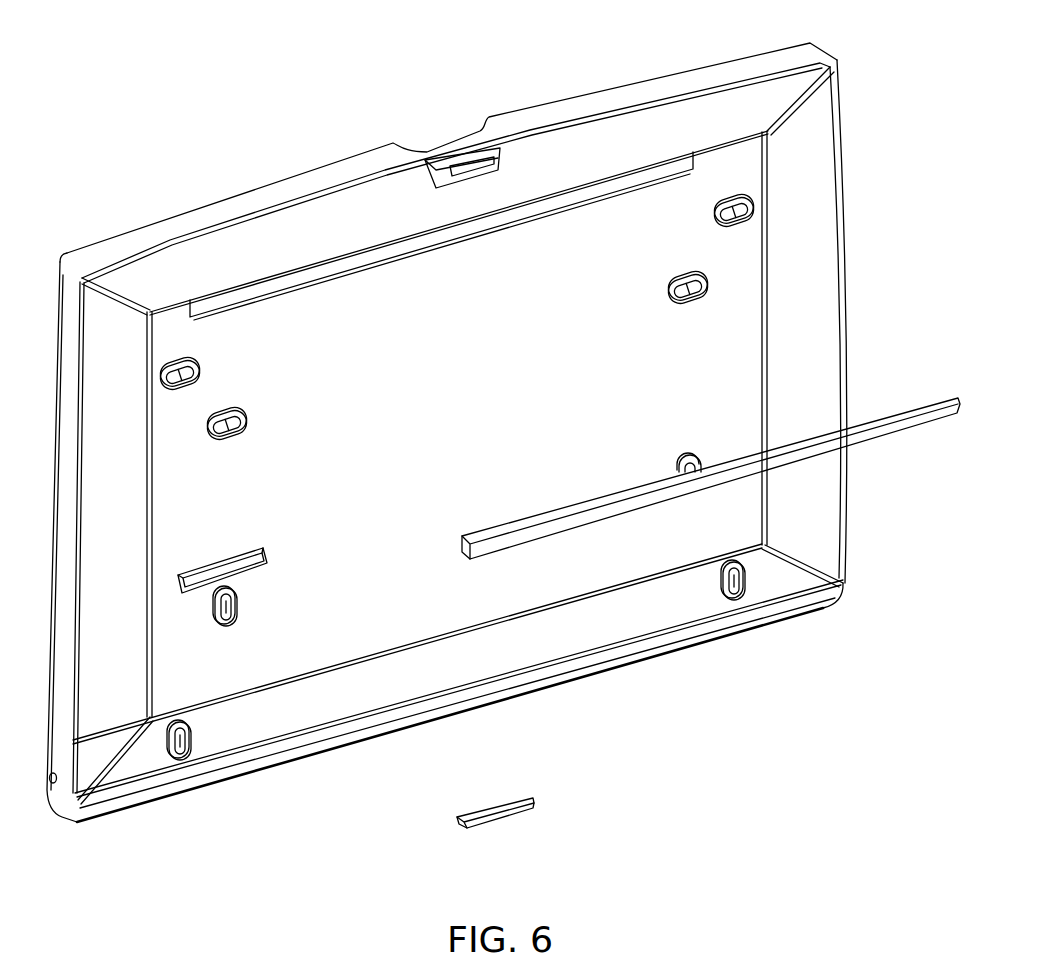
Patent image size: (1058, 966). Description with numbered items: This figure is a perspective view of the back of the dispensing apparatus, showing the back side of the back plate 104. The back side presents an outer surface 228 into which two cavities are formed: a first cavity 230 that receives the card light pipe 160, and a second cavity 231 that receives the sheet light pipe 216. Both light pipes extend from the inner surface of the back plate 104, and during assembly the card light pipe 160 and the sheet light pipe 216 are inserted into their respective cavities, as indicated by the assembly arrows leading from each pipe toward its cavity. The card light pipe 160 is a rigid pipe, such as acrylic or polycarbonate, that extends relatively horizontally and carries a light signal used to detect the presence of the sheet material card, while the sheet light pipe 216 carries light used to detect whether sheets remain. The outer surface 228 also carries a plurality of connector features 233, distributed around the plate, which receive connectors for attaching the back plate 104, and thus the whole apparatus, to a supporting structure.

The back plate 104 is at (712, 72).
The card light pipe 160 is at (271, 307).
The sheet light pipe 216 is at (242, 585).
The outer surface 228 is at (380, 577).
The first cavity 230 is at (565, 217).
The second cavity 231 is at (231, 541).
The connector features 233 is at (200, 366).